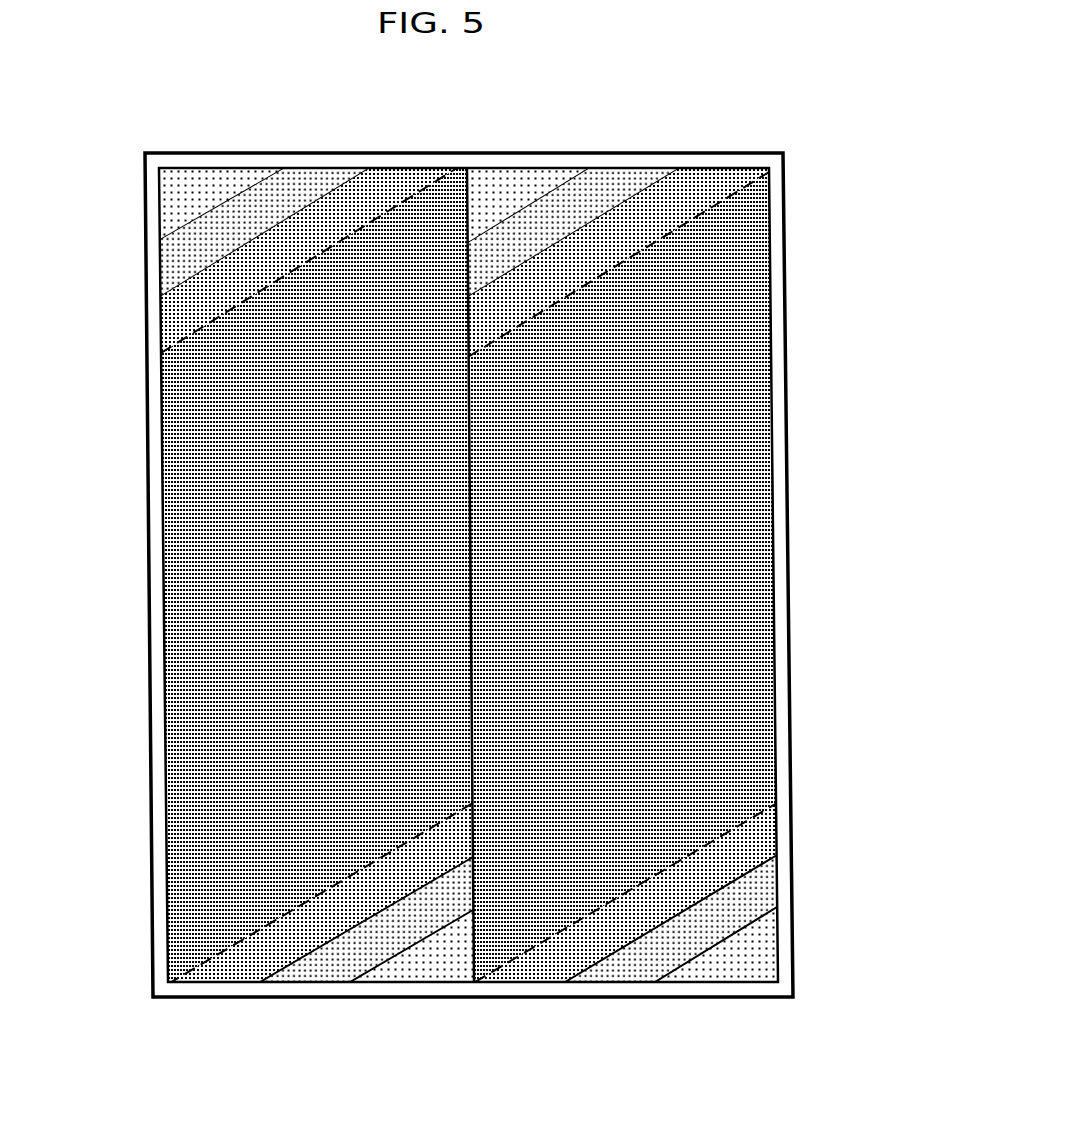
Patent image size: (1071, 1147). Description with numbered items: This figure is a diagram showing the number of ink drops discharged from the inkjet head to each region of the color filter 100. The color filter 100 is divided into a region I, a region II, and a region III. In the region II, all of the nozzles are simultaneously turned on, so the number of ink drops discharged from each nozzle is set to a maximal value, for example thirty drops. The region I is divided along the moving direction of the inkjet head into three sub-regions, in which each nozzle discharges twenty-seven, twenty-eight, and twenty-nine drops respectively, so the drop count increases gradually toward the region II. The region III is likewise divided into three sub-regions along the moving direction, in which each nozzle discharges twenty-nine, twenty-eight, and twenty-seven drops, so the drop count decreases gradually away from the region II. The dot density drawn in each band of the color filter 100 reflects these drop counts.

The color filter 100 is at (723, 162).
The region I is at (402, 259).
The region II is at (190, 600).
The region III is at (472, 951).